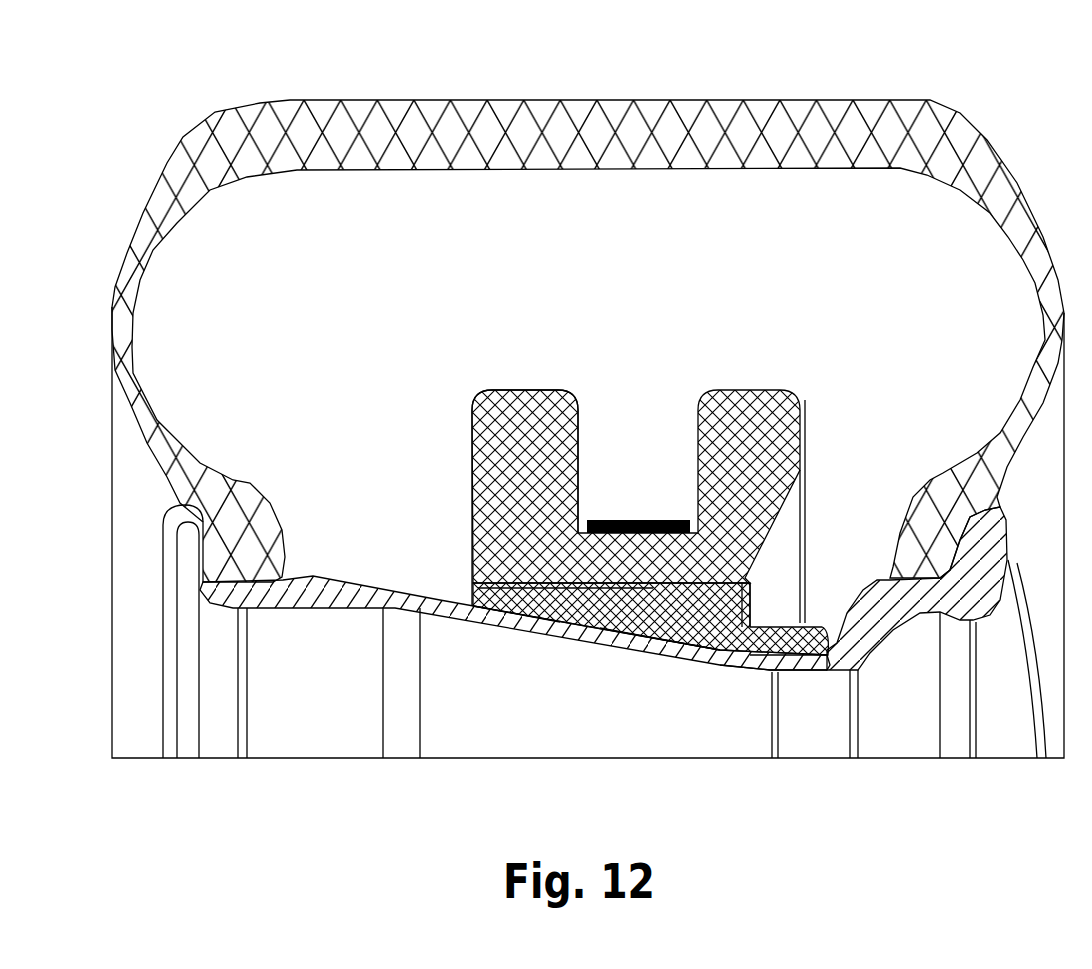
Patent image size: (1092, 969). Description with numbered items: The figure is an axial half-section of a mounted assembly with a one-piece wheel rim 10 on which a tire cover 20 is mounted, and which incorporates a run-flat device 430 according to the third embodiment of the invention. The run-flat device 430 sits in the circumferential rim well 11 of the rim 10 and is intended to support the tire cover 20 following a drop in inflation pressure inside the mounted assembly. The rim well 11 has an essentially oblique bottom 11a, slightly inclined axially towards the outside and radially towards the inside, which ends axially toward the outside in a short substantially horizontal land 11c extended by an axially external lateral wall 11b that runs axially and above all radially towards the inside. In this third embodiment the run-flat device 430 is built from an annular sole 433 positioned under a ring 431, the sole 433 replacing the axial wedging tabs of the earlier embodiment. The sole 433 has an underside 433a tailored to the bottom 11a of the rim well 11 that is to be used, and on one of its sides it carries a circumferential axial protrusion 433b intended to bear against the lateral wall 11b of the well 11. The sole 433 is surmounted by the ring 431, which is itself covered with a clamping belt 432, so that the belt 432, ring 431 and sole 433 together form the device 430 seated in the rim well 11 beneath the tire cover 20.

The tire cover 20 is at (755, 98).
The wheel rim 10 is at (588, 532).
The rim well 11 is at (515, 657).
The bottom of the rim well 11a is at (663, 647).
The axially external lateral wall 11b is at (838, 627).
The land 11c is at (770, 660).
The run-flat device 430 is at (670, 492).
The ring 431 is at (515, 387).
The clamping belt 432 is at (632, 517).
The annular sole 433 is at (670, 638).
The underside of the sole 433a is at (543, 622).
The circumferential axial protrusion 433b is at (797, 633).